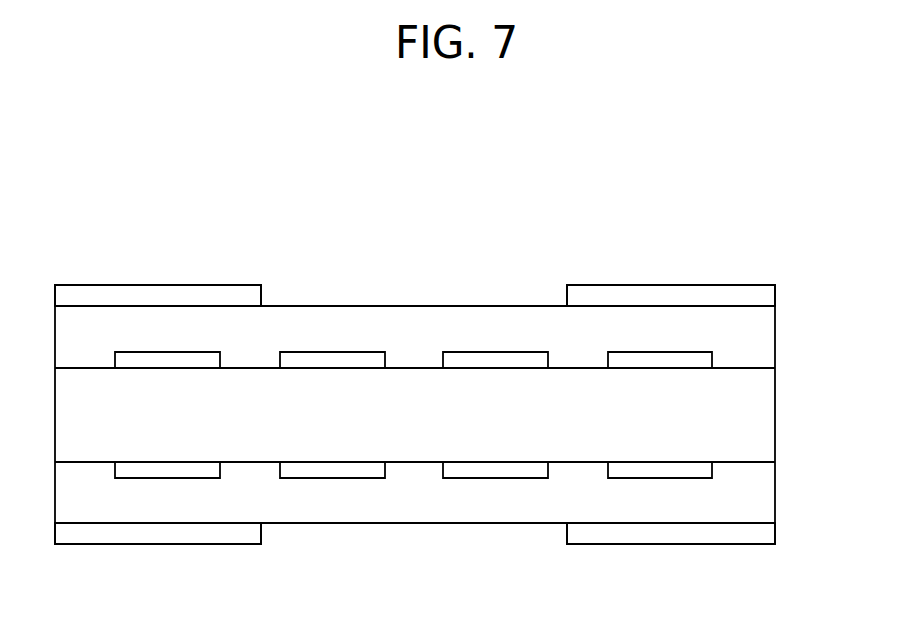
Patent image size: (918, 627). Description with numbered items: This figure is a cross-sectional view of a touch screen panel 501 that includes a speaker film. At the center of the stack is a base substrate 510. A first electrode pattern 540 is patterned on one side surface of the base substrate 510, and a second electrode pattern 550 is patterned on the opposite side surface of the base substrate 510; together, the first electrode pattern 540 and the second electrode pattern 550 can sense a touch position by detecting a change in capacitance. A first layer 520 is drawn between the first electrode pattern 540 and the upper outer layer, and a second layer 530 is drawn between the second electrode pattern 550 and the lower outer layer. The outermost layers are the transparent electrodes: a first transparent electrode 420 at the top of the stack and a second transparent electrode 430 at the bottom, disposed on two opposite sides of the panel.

The touch screen panel 501 is at (459, 144).
The first transparent electrode 420 is at (767, 290).
The first electrode layer 520 is at (767, 326).
The first electrode pattern 540 is at (712, 357).
The base substrate 510 is at (767, 409).
The second electrode pattern 550 is at (712, 462).
The second electrode layer 530 is at (767, 503).
The second transparent electrode 430 is at (767, 528).